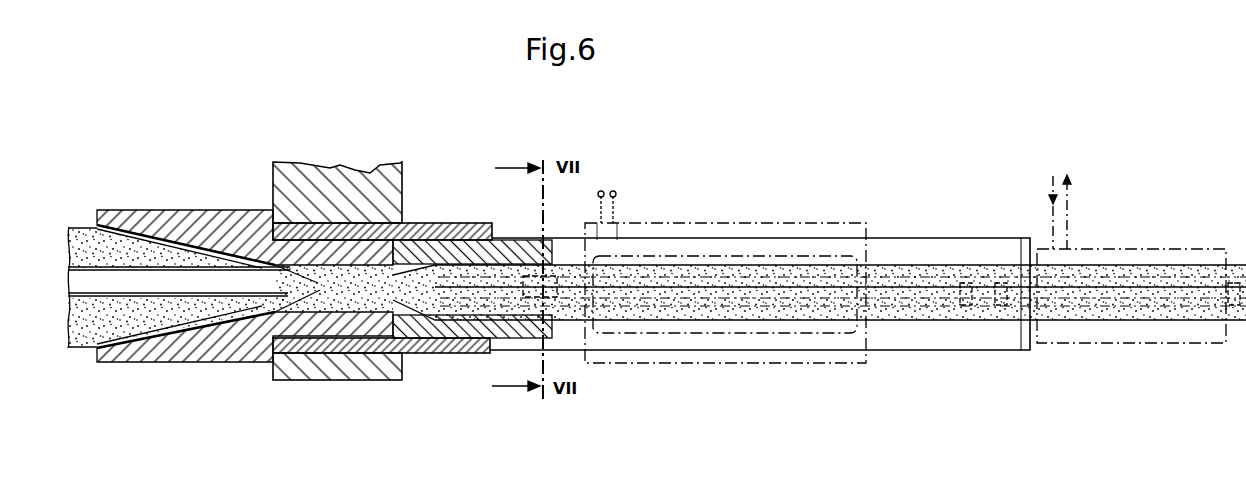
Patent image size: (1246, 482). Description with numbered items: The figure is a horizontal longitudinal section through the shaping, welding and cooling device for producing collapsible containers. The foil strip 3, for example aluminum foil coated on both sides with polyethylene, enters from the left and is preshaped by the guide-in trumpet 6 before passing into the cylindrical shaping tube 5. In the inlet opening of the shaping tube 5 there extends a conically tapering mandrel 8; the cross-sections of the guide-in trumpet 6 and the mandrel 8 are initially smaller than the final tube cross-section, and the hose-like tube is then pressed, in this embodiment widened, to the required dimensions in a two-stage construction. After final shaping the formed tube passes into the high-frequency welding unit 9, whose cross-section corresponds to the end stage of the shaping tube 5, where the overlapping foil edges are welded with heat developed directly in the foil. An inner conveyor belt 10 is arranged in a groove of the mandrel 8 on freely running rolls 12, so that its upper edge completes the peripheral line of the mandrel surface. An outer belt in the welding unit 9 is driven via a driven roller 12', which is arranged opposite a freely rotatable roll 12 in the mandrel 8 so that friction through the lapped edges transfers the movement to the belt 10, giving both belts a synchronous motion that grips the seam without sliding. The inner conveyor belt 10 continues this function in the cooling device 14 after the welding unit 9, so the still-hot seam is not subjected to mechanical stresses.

The foil strip 3 is at (82, 230).
The mandrel 8 is at (188, 282).
The guide-in trumpet 6 is at (170, 338).
The shaping tube 5 is at (445, 247).
The driven roller 12' is at (384, 308).
The high-frequency welding unit 9 is at (698, 226).
The conveyor belt 10 is at (660, 300).
The rolls 12 is at (1099, 342).
The cooling device 14 is at (1128, 258).